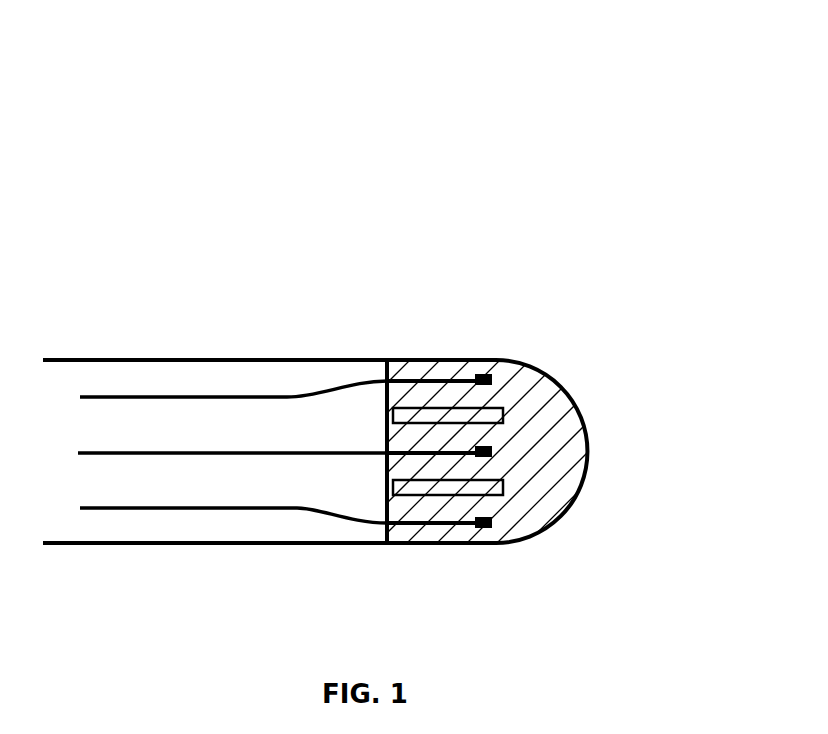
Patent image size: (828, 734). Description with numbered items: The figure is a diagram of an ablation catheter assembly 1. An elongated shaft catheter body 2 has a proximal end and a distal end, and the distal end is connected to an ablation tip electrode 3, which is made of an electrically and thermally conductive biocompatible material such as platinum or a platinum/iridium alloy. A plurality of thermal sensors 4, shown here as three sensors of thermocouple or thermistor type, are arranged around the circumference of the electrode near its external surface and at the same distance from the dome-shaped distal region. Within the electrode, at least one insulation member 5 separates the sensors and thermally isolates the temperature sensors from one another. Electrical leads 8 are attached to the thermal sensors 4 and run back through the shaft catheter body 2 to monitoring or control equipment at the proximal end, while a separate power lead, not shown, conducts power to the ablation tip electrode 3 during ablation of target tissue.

The ablation catheter assembly 1 is at (359, 182).
The elongated shaft catheter body 2 is at (132, 358).
The ablation tip electrode 3 is at (545, 493).
The thermal sensors 4 is at (492, 523).
The insulation member 5 is at (403, 477).
The electrical leads 8 is at (252, 513).